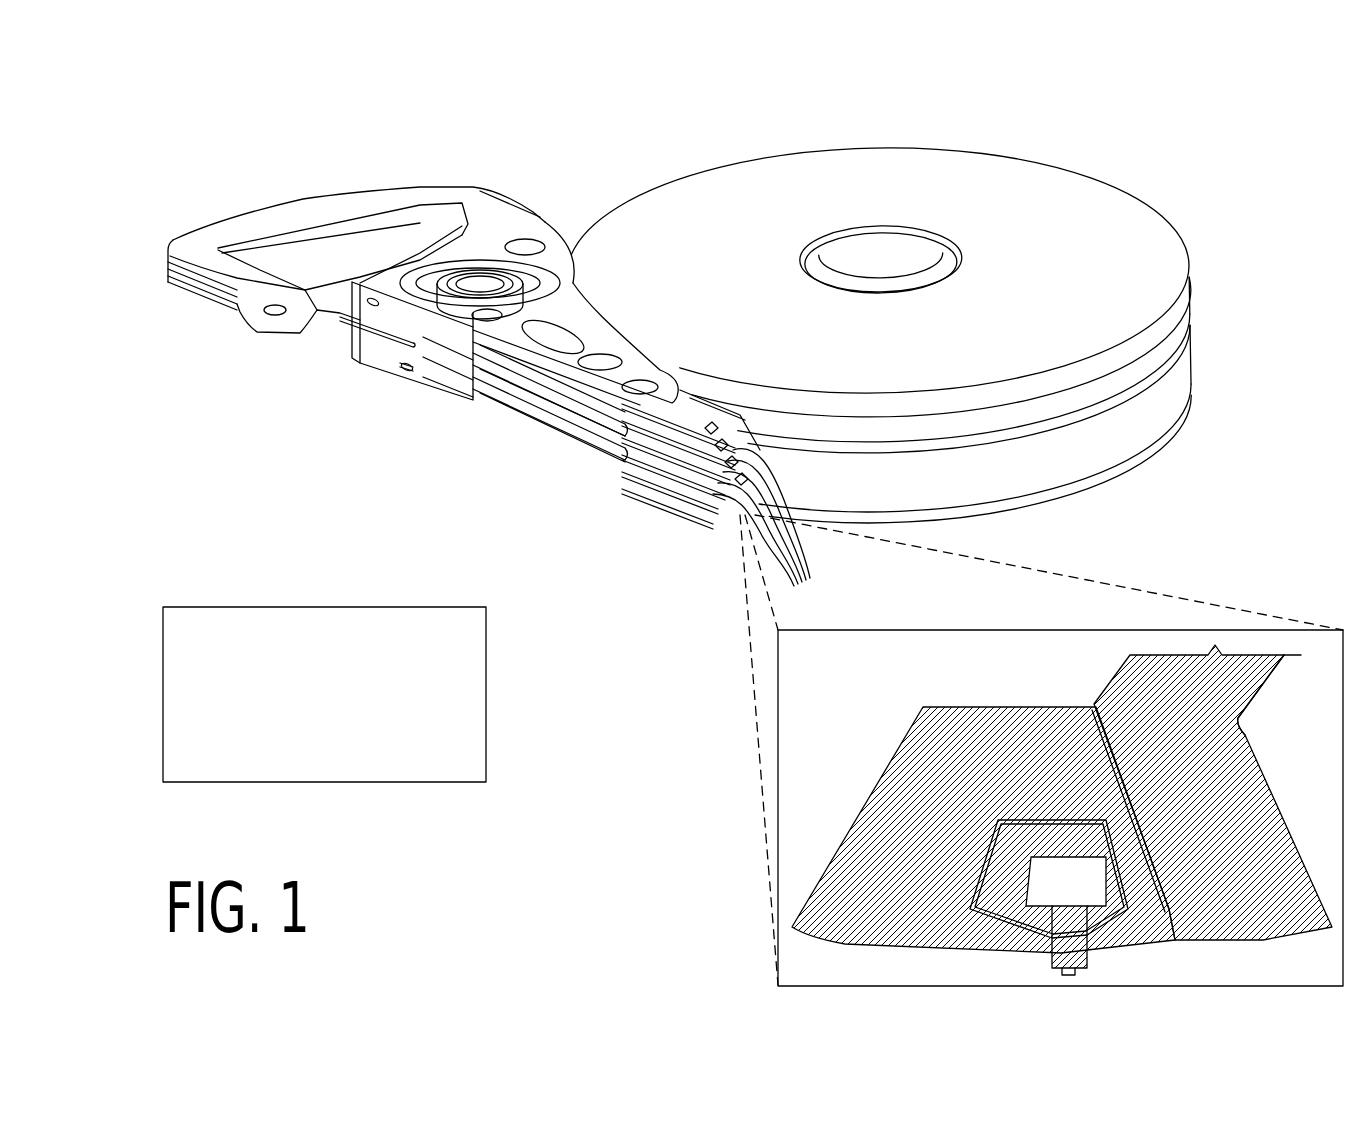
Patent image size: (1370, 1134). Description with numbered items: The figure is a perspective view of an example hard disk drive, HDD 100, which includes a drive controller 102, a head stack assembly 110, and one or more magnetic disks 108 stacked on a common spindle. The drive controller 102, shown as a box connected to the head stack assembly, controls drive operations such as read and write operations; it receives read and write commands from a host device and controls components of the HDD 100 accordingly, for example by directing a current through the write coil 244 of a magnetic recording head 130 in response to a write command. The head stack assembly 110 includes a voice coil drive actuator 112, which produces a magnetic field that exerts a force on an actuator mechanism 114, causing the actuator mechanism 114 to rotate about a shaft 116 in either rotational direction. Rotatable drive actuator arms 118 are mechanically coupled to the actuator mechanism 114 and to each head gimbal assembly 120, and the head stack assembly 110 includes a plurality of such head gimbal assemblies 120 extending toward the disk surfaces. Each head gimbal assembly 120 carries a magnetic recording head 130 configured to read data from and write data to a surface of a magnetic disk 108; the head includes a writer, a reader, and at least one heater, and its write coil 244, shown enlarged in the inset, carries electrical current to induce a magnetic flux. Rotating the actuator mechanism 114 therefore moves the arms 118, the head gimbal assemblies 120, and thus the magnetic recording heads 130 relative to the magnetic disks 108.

The hard disk drive 100 is at (1192, 96).
The drive controller 102 is at (378, 364).
The magnetic disk 108 is at (1024, 158).
The head stack assembly 110 is at (526, 526).
The voice coil drive actuator 112 is at (306, 194).
The actuator mechanism 114 is at (556, 212).
The shaft 116 is at (485, 290).
The rotatable drive actuator arms 118 is at (510, 388).
The head gimbal assembly 120 is at (722, 413).
The magnetic recording head 130 is at (884, 670).
The write coil 244 is at (1252, 738).